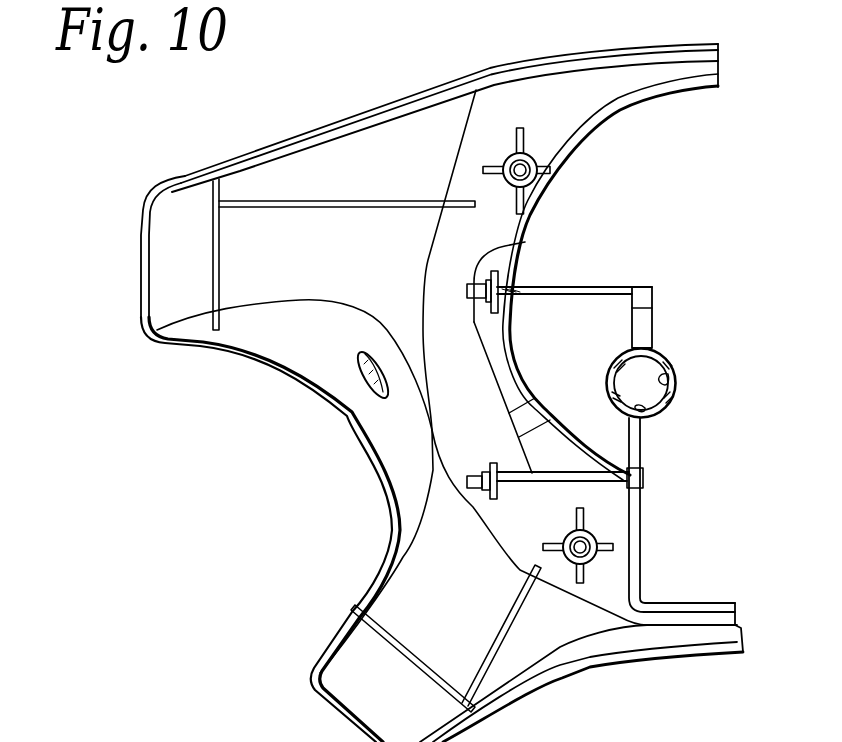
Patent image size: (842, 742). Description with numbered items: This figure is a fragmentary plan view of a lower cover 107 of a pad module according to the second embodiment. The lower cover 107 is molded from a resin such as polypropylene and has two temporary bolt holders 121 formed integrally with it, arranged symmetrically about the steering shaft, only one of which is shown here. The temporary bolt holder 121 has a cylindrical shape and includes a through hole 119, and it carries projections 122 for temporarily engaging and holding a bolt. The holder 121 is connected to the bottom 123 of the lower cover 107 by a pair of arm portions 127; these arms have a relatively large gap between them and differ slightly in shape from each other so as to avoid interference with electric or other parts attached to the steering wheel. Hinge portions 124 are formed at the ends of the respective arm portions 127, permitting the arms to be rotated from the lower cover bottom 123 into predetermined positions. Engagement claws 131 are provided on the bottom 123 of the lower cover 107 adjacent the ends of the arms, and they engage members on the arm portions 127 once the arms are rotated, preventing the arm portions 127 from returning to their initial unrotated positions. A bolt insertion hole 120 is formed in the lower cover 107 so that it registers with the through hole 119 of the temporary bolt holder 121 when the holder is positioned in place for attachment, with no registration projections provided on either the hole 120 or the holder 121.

The lower cover 107 is at (284, 173).
The through hole 119 is at (650, 412).
The bolt insertion hole 120 is at (368, 387).
The temporary bolt holder 121 is at (676, 400).
The projection 122 is at (672, 370).
The bottom 123 is at (564, 95).
The hinge portion 124 is at (498, 269).
The arm portion 127 is at (604, 286).
The engagement claw 131 is at (522, 243).